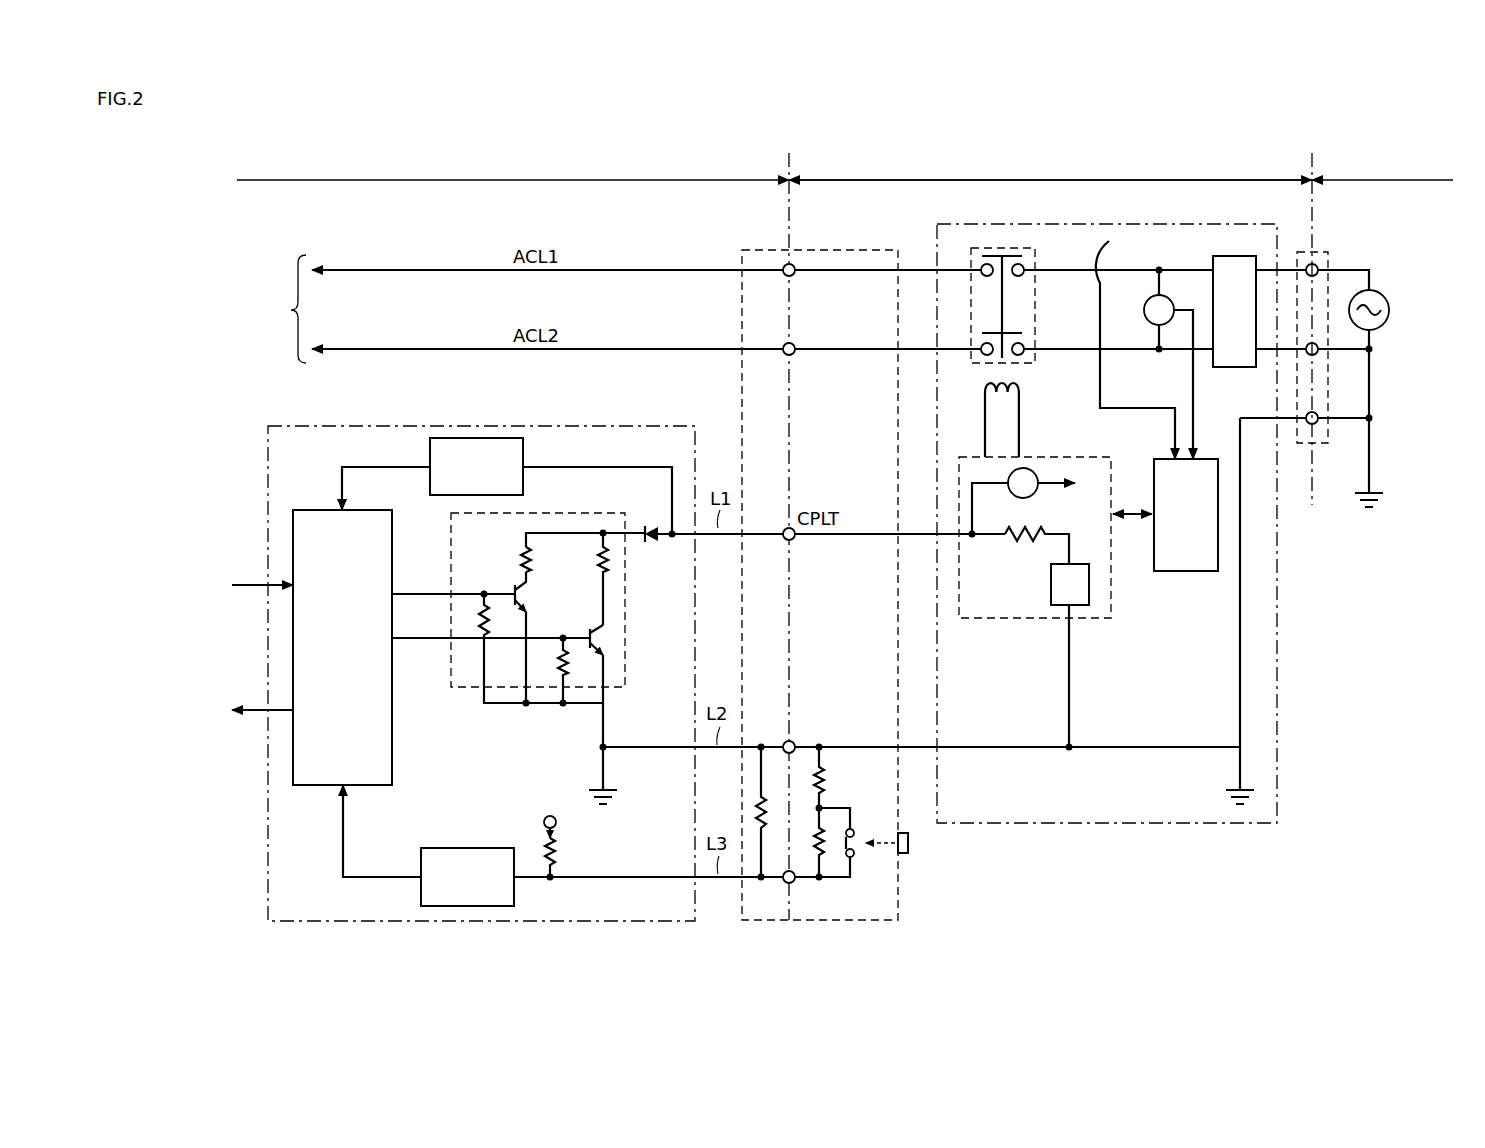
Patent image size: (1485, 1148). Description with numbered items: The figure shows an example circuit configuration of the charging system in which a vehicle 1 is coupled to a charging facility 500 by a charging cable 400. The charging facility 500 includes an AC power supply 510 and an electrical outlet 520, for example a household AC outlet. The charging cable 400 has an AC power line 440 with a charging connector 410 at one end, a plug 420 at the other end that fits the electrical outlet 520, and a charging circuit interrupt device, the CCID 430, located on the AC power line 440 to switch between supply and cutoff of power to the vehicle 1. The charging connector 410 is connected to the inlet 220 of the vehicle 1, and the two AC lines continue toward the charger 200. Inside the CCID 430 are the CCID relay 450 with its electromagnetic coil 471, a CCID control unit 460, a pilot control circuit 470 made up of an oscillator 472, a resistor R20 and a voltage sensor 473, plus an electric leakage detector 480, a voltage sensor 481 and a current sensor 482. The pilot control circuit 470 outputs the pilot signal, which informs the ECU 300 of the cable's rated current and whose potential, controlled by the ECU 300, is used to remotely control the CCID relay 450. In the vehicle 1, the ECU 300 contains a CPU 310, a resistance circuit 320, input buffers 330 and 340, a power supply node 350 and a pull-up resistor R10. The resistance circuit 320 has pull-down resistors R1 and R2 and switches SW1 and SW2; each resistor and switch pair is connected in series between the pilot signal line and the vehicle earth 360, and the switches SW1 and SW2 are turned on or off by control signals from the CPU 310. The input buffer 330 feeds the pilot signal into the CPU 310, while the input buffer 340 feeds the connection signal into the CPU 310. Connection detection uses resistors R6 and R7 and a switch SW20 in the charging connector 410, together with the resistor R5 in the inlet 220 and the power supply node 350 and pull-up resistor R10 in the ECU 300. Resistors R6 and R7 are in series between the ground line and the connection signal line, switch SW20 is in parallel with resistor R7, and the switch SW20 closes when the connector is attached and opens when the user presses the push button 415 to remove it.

The vehicle 1 is at (513, 166).
The charger 200 is at (207, 309).
The inlet 220 is at (748, 250).
The ECU 300 is at (607, 426).
The CPU 310 is at (365, 785).
The resistance circuit 320 is at (538, 595).
The input buffer 330 is at (468, 438).
The input buffer 340 is at (470, 848).
The power supply node 350 is at (549, 815).
The vehicle earth 360 is at (612, 789).
The charging cable 400 is at (1050, 166).
The charging connector 410 is at (810, 250).
The push button 415 is at (903, 833).
The plug 420 is at (1297, 252).
The charging circuit interrupt device (CCID) 430 is at (1190, 224).
The AC power line 440 is at (912, 372).
The CCID relay 450 is at (1020, 251).
The CCID control unit 460 is at (1200, 571).
The CPLT control circuit 470 is at (1035, 589).
The electromagnetic coil 471 is at (1021, 391).
The oscillator 472 is at (1051, 592).
The voltage sensor 473 is at (1033, 495).
The electric leakage detector 480 is at (1236, 368).
The voltage sensor 481 is at (1150, 322).
The current sensor 482 is at (1109, 243).
The charging facility 500 is at (1382, 157).
The AC power supply 510 is at (1372, 290).
The electrical outlet 520 is at (1326, 252).
The pull-down resistor R1 is at (518, 554).
The pull-down resistor R2 is at (597, 554).
The resistor R5 is at (756, 808).
The resistor R6 is at (816, 765).
The resistor R7 is at (820, 858).
The pull-up resistor R10 is at (561, 851).
The resistor R20 is at (1025, 541).
The switch SW1 is at (531, 597).
The switch SW2 is at (612, 640).
The switch SW20 is at (853, 828).